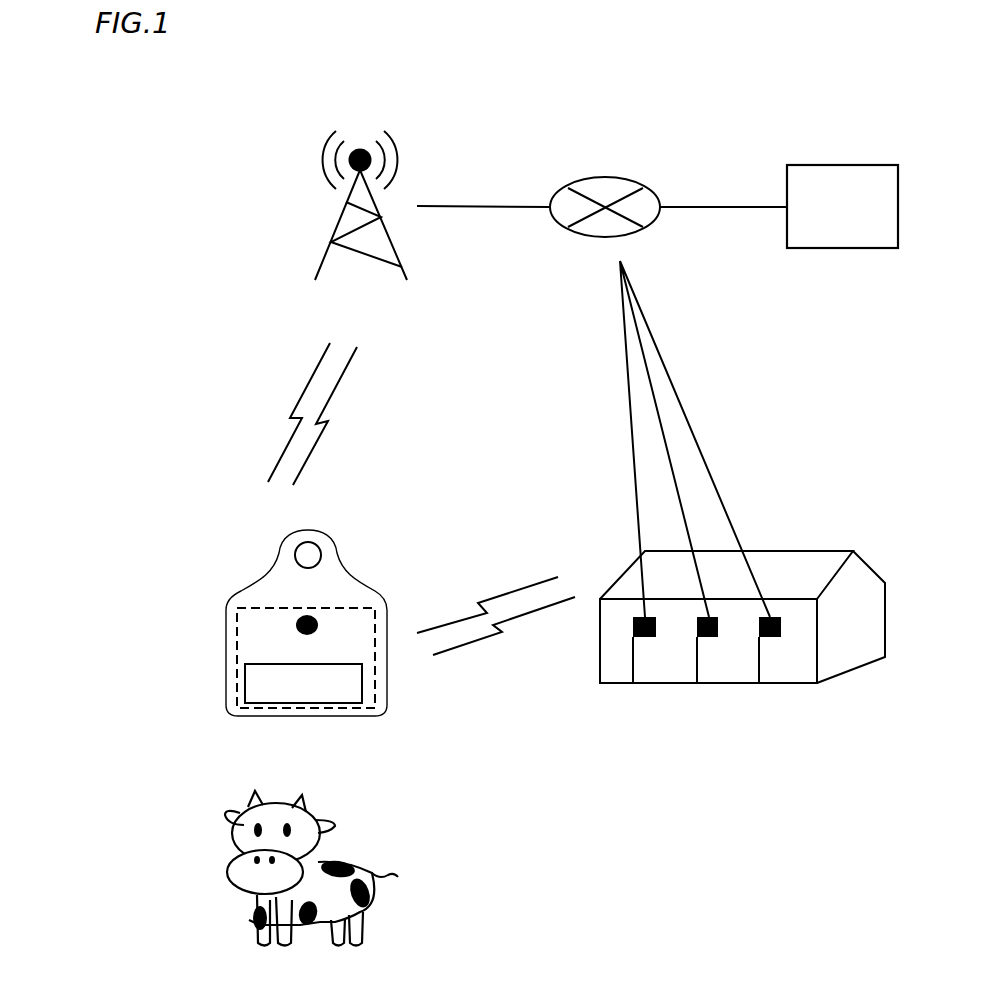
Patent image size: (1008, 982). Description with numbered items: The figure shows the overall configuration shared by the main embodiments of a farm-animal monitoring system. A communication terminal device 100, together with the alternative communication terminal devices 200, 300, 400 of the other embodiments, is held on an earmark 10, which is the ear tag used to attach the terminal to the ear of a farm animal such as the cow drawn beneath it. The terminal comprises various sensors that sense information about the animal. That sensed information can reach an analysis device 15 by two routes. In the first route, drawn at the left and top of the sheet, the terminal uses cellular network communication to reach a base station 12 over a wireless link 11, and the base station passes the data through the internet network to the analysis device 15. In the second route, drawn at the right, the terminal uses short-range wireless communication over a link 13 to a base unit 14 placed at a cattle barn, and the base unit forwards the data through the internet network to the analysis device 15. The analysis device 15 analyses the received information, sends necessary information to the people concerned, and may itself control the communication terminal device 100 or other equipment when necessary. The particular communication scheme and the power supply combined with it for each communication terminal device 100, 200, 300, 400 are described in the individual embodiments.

The earmark 10 is at (340, 563).
The internet network 11 is at (299, 414).
The base station 12 is at (432, 177).
The wireless communication link 13 is at (496, 626).
The base unit 14 is at (742, 472).
The analysis device 15 is at (842, 191).
The communication terminal device 100 is at (257, 640).
The communication terminal device 200 is at (306, 658).
The communication terminal device 300 is at (306, 658).
The communication terminal device 400 is at (306, 658).